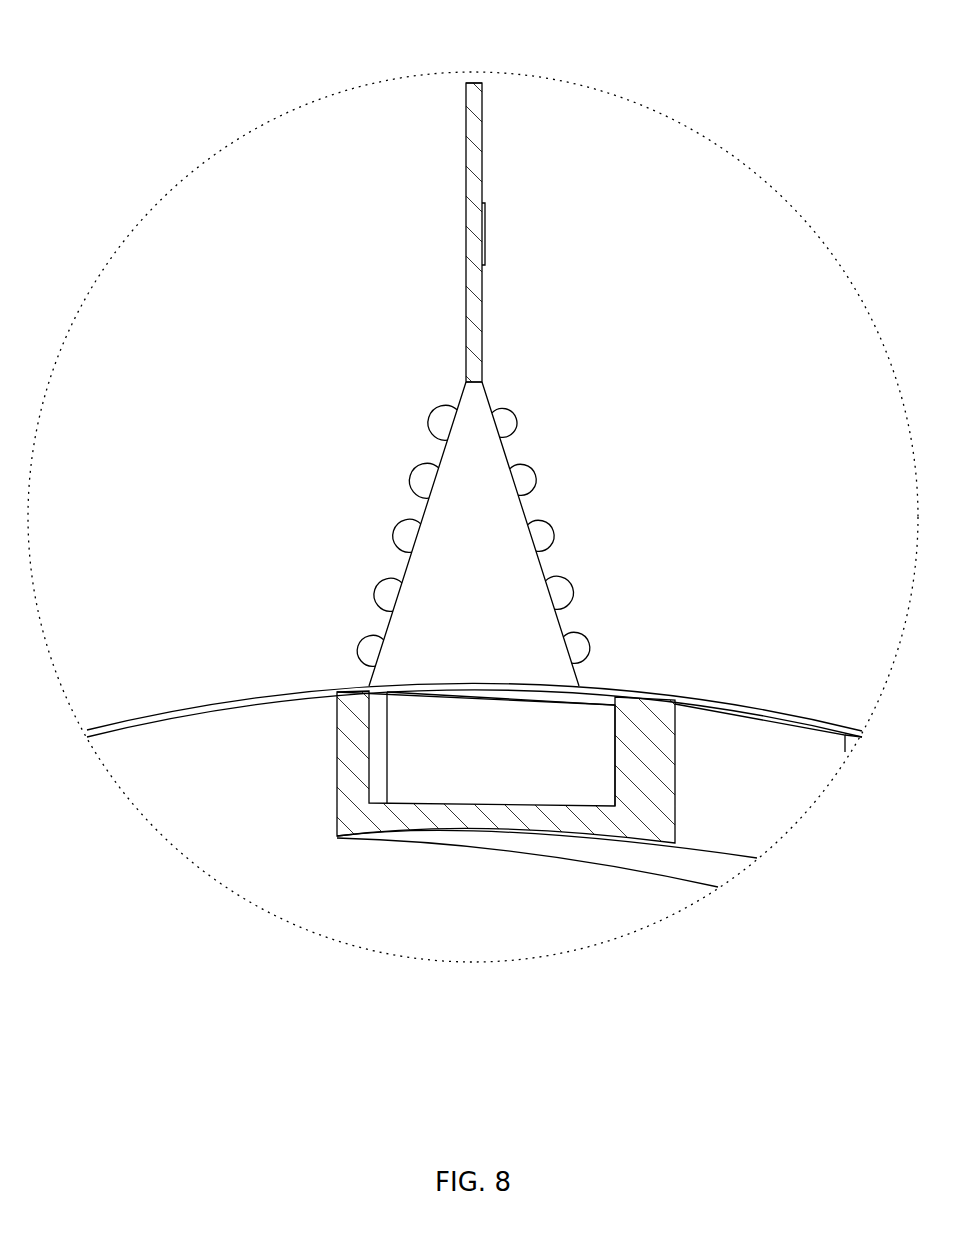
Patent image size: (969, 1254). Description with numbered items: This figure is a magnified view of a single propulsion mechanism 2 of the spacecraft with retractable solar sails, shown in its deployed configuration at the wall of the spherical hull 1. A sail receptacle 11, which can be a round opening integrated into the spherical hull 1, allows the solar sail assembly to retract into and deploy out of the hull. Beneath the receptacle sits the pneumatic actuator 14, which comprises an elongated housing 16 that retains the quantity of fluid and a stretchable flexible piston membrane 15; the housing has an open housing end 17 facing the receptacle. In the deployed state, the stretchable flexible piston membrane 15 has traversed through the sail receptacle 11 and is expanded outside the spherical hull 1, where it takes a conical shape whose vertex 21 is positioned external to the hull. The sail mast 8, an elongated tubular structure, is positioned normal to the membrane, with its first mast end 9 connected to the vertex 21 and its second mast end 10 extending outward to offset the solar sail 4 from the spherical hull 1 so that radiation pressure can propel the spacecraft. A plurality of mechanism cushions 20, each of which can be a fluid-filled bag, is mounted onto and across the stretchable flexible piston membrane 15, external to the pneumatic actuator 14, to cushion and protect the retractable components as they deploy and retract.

The spherical hull 1 is at (182, 712).
The propulsion mechanism 2 is at (322, 338).
The solar sail 4 is at (485, 228).
The sail mast 8 is at (466, 210).
The first mast end 9 is at (460, 380).
The second mast end 10 is at (463, 86).
The sail receptacle 11 is at (522, 684).
The pneumatic actuator 14 is at (433, 872).
The stretchable flexible piston membrane 15 is at (525, 568).
The elongated housing 16 is at (752, 726).
The open housing end 17 is at (419, 708).
The mechanism cushions 20 is at (405, 540).
The vertex 21 is at (488, 383).